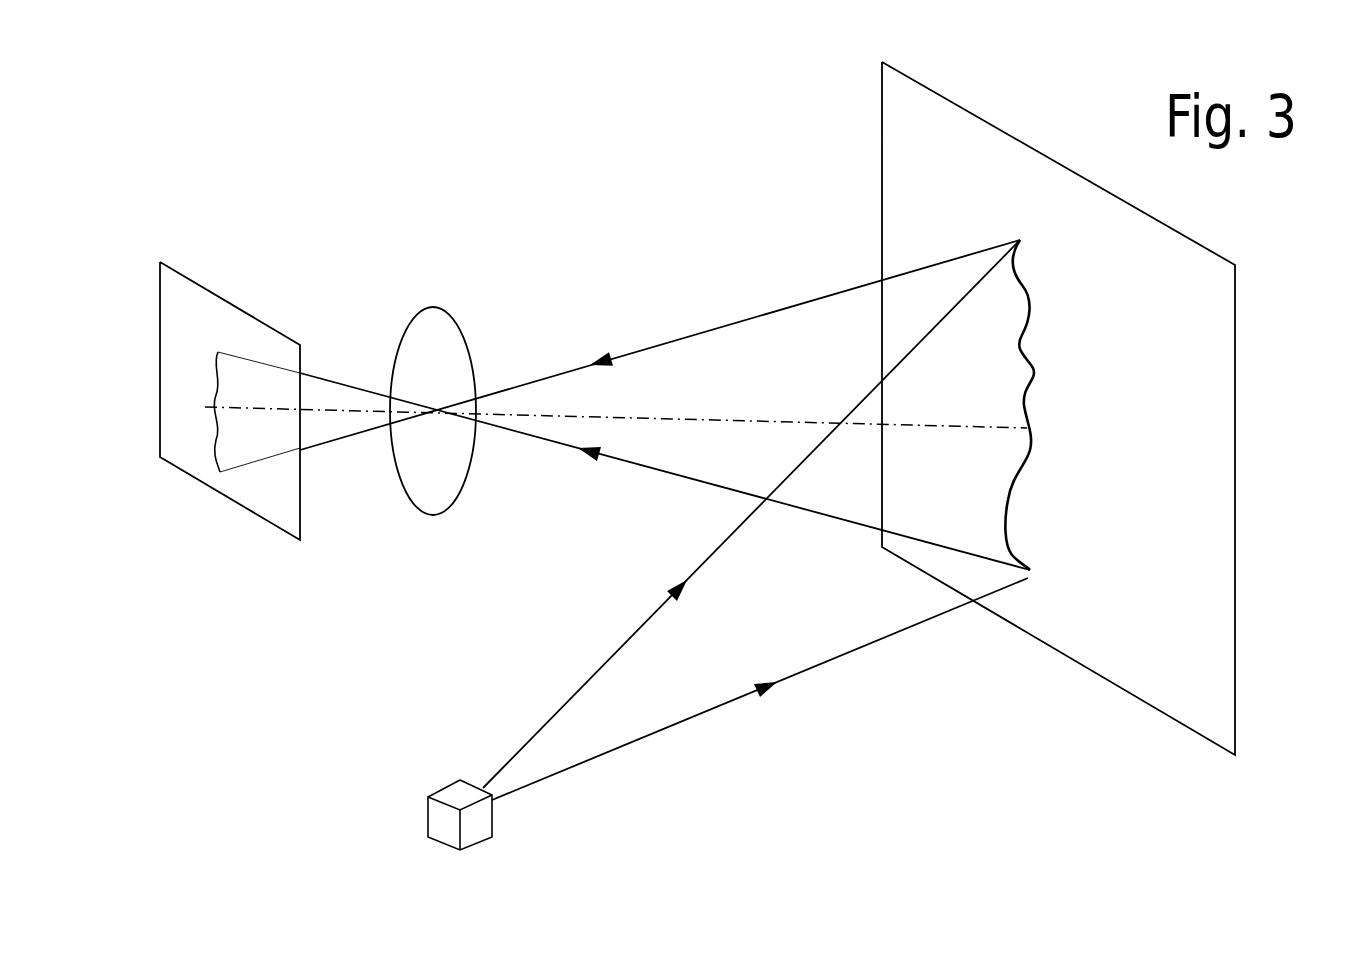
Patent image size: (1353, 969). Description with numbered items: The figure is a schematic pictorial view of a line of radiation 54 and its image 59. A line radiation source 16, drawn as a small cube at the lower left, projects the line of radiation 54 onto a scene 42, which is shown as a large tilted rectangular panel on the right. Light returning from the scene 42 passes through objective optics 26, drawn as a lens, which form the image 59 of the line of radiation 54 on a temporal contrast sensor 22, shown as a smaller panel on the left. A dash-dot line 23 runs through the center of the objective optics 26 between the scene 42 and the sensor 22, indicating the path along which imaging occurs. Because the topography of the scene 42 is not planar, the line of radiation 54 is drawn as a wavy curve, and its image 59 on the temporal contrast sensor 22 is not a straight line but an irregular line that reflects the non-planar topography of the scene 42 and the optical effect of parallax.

The line radiation source 16 is at (478, 825).
The temporal contrast sensor 22 is at (198, 312).
The optical axis 23 is at (685, 418).
The objective optics 26 is at (428, 343).
The scene 42 is at (952, 195).
The line of radiation 54 is at (1017, 487).
The image 59 is at (213, 438).